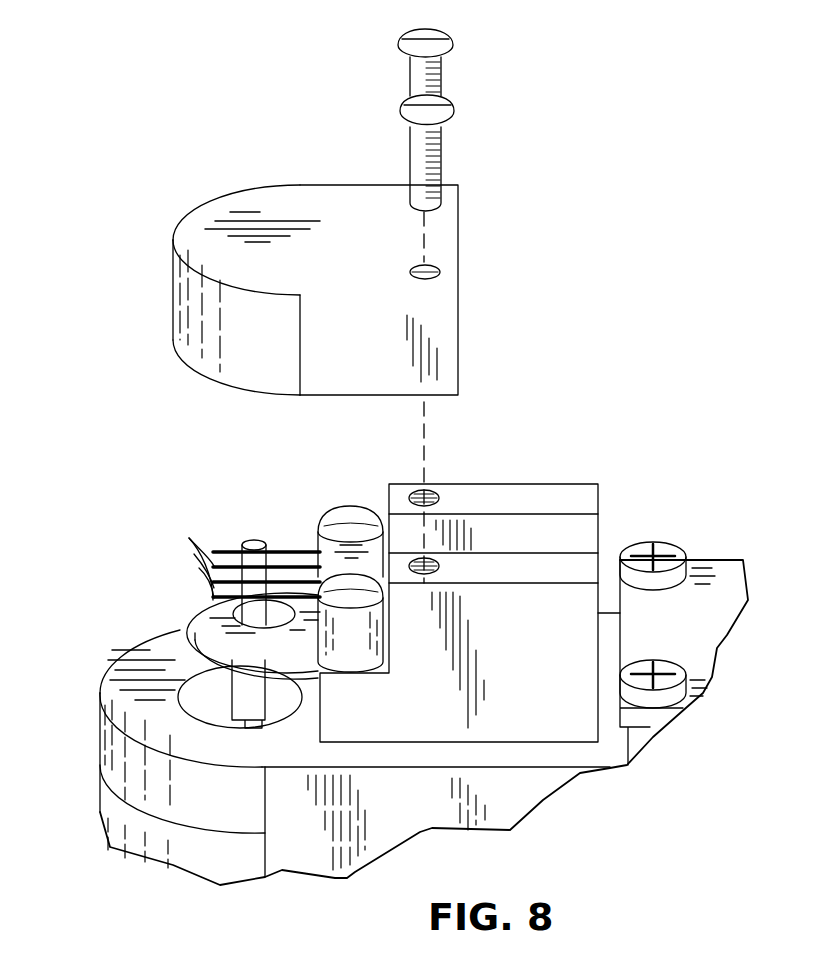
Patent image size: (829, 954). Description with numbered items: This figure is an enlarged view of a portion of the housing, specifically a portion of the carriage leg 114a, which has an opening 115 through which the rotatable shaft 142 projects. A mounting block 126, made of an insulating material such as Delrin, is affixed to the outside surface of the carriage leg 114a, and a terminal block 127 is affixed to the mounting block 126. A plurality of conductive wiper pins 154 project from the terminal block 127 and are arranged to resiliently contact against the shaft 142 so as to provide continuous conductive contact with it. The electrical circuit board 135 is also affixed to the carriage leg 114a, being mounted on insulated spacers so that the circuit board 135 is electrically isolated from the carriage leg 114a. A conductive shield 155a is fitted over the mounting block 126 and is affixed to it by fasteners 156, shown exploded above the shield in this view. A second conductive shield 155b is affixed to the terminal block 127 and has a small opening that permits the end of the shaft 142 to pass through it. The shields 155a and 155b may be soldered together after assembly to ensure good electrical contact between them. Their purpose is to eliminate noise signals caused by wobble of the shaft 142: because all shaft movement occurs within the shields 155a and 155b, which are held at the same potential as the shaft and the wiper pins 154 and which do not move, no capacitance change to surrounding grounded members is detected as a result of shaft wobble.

The fasteners 156 is at (454, 39).
The conductive shield 155a is at (238, 192).
The mounting block 126 is at (520, 484).
The terminal block 127 is at (322, 528).
The rotatable shaft 142 is at (258, 540).
The conductive wiper pins 154 is at (194, 545).
The second conductive shield 155b is at (203, 601).
The opening 115 is at (185, 688).
The carriage leg 114a is at (105, 733).
The electrical circuit board 135 is at (705, 560).